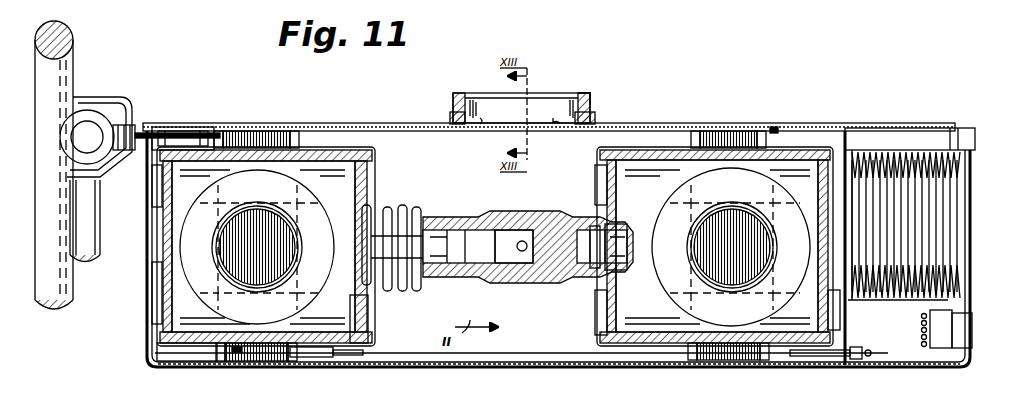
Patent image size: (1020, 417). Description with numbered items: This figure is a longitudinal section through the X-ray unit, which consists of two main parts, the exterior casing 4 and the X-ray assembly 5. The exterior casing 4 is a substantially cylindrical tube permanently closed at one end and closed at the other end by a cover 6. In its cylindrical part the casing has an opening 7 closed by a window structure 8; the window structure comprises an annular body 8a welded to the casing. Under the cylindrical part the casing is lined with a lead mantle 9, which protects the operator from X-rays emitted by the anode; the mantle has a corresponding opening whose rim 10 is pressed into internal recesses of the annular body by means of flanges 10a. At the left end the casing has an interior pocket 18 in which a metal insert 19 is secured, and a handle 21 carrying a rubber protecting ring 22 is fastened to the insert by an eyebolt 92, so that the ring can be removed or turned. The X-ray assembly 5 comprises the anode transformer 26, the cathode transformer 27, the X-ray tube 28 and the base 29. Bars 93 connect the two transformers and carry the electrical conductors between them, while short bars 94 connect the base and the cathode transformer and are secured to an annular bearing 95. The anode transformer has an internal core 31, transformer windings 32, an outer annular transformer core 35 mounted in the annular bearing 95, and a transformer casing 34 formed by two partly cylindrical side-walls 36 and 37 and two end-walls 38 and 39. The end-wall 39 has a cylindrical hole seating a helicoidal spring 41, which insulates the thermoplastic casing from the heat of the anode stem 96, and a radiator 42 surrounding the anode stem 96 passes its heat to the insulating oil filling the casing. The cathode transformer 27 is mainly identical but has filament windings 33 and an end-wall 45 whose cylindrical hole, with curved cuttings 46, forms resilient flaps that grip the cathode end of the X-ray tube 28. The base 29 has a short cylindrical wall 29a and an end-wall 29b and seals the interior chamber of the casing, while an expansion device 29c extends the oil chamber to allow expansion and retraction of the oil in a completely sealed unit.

The exterior casing 4 is at (258, 131).
The X-ray assembly 5 is at (662, 345).
The cover 6 is at (970, 222).
The opening 7 is at (495, 130).
The window structure 8 is at (592, 100).
The annular body 8a is at (582, 93).
The lead mantle 9 is at (424, 131).
The rim of the mantle 10 is at (553, 127).
The flanges 10a is at (595, 117).
The interior pockets 18 is at (205, 131).
The metal inserts 19 is at (180, 127).
The handles 21 is at (100, 222).
The rubber protecting rings 22 is at (70, 60).
The anode transformer 26 is at (290, 212).
The cathode transformer 27 is at (712, 220).
The X-ray tube 28 is at (512, 212).
The base 29 is at (892, 350).
The short cylindrical wall 29a is at (885, 130).
The end-wall 29b is at (845, 135).
The expansion device 29c is at (920, 128).
The internal core 31 is at (270, 255).
The transformer windings 32 is at (295, 205).
The filament windings 33 is at (690, 210).
The transformer casing 34 is at (190, 345).
The outer annular transformer core 35 is at (268, 362).
The side-wall 36 is at (335, 357).
The side-wall 37 is at (300, 190).
The end-wall 38 is at (165, 268).
The end-wall 39 is at (368, 320).
The helicoidal spring 41 is at (386, 208).
The radiator 42 is at (416, 207).
The end-wall 45 is at (592, 218).
The curved cuttings 46 is at (600, 218).
The eyebolts 92 is at (95, 115).
The bars 93 is at (480, 365).
The short bars 94 is at (805, 357).
The annular bearing 95 is at (775, 127).
The anode stem 96 is at (462, 277).